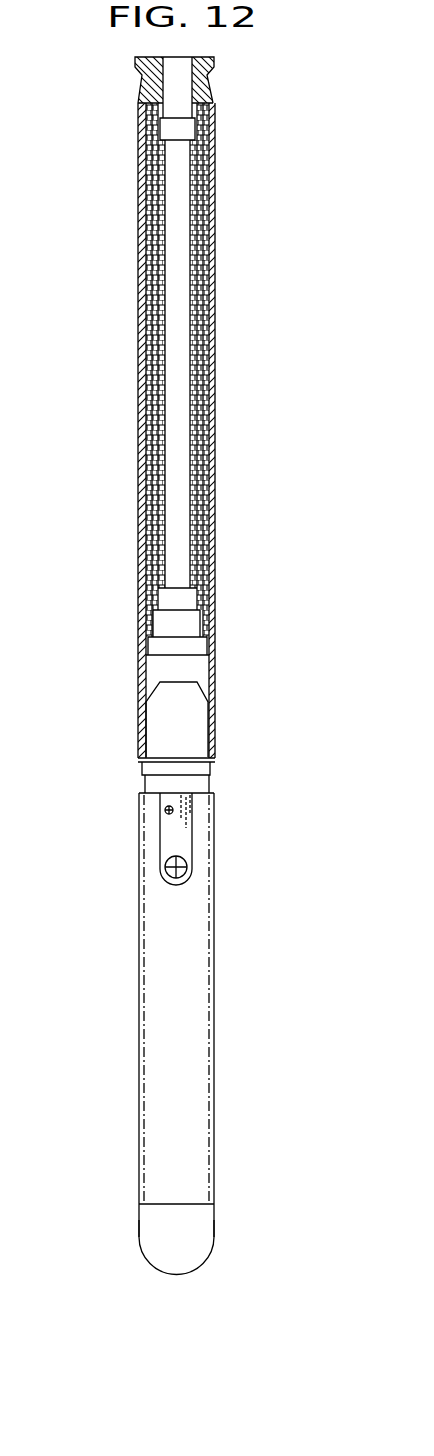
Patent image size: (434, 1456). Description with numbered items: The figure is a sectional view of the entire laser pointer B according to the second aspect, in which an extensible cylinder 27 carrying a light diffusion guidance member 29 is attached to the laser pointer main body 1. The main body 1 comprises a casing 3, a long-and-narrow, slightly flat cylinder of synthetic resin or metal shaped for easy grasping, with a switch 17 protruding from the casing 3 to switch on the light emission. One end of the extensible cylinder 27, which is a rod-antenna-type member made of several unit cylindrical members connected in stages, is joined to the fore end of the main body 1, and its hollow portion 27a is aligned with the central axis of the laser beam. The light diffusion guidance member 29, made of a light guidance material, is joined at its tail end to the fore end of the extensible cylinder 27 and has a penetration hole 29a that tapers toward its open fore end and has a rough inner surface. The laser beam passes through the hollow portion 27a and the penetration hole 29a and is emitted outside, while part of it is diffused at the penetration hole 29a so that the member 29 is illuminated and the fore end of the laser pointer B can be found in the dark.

The laser pointer main body 1 is at (196, 906).
The casing 3 is at (207, 1083).
The switch 17 is at (170, 873).
The extensible cylinder 27 is at (215, 285).
The hollow portion 27a is at (177, 193).
The light diffusion guidance member 29 is at (207, 87).
The penetration hole 29a is at (170, 88).
The laser pointer B is at (136, 1253).